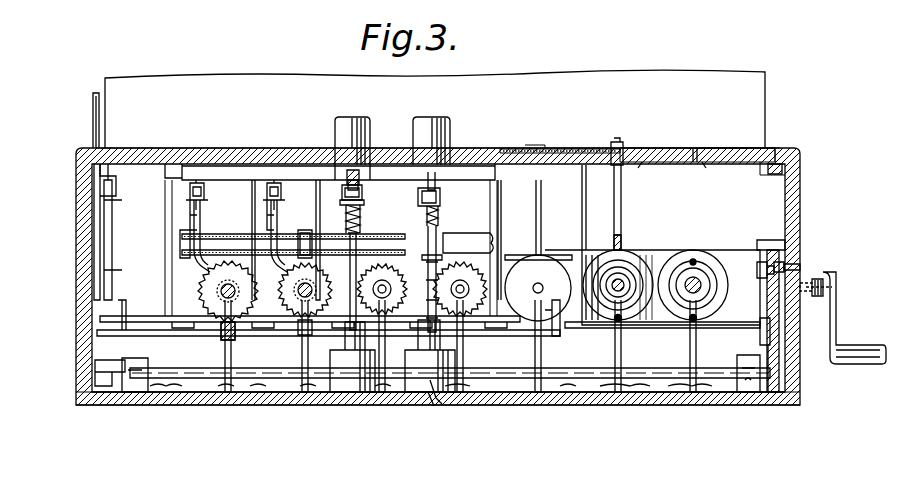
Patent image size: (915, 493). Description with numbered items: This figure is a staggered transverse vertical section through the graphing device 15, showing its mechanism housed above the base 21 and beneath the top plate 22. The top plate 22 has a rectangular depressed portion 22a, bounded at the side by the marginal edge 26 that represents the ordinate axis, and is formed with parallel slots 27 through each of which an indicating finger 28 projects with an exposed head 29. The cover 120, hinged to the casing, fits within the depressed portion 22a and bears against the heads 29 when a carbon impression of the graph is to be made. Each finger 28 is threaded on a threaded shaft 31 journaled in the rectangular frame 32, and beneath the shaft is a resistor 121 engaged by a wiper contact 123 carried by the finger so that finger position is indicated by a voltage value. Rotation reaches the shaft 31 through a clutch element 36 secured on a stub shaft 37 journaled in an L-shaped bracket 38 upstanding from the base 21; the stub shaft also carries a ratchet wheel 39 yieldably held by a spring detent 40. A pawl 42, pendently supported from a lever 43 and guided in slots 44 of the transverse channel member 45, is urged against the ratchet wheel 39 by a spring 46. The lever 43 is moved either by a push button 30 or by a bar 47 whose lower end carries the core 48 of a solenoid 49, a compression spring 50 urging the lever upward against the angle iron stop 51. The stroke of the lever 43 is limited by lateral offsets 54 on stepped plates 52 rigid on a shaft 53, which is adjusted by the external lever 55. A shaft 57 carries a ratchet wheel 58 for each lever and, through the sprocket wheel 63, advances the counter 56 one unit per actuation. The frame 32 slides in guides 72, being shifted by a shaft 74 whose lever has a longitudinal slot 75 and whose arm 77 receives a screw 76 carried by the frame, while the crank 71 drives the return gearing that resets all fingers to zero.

The graphing device 15 is at (828, 3).
The base 21 is at (573, 395).
The cover 120 is at (748, 96).
The lever 55 is at (92, 120).
The sprocket wheel 63 is at (121, 162).
The counter 56 is at (165, 163).
The angle iron stop 51 is at (313, 163).
The push buttons 30 is at (418, 121).
The depressed portion 22a is at (522, 147).
The head 29 is at (612, 146).
The indicating finger 28 is at (613, 188).
The top plate 22 is at (680, 163).
The slots 27 is at (640, 160).
The side marginal edge 26 is at (717, 148).
The lever 43 is at (274, 182).
The slots 44 is at (222, 228).
The spring 46 is at (183, 237).
The pawl 42 is at (190, 268).
The lateral offsets 54 is at (345, 207).
The compression spring 50 is at (364, 213).
The bar 47 is at (370, 234).
The ratchet wheel 58 is at (443, 230).
The channel member 45 is at (487, 230).
The shaft 57 is at (472, 244).
The ratchet wheel 39 is at (197, 293).
The stub shaft 37 is at (296, 300).
The L-shaped bracket 38 is at (302, 355).
The spring detent 40 is at (226, 324).
The plates 52 is at (172, 320).
The shaft 53 is at (140, 322).
The shaft 74 is at (160, 368).
The core 48 is at (362, 393).
The solenoid 49 is at (424, 393).
The clutch element 36 is at (526, 262).
The frame 32 is at (568, 262).
The threaded shaft 31 is at (680, 278).
The resistor 121 is at (698, 318).
The wiper contact 123 is at (650, 320).
The arm 77 is at (760, 332).
The guides 72 is at (770, 242).
The screw 76 is at (762, 286).
The longitudinal slot 75 is at (784, 270).
The crank 71 is at (836, 302).